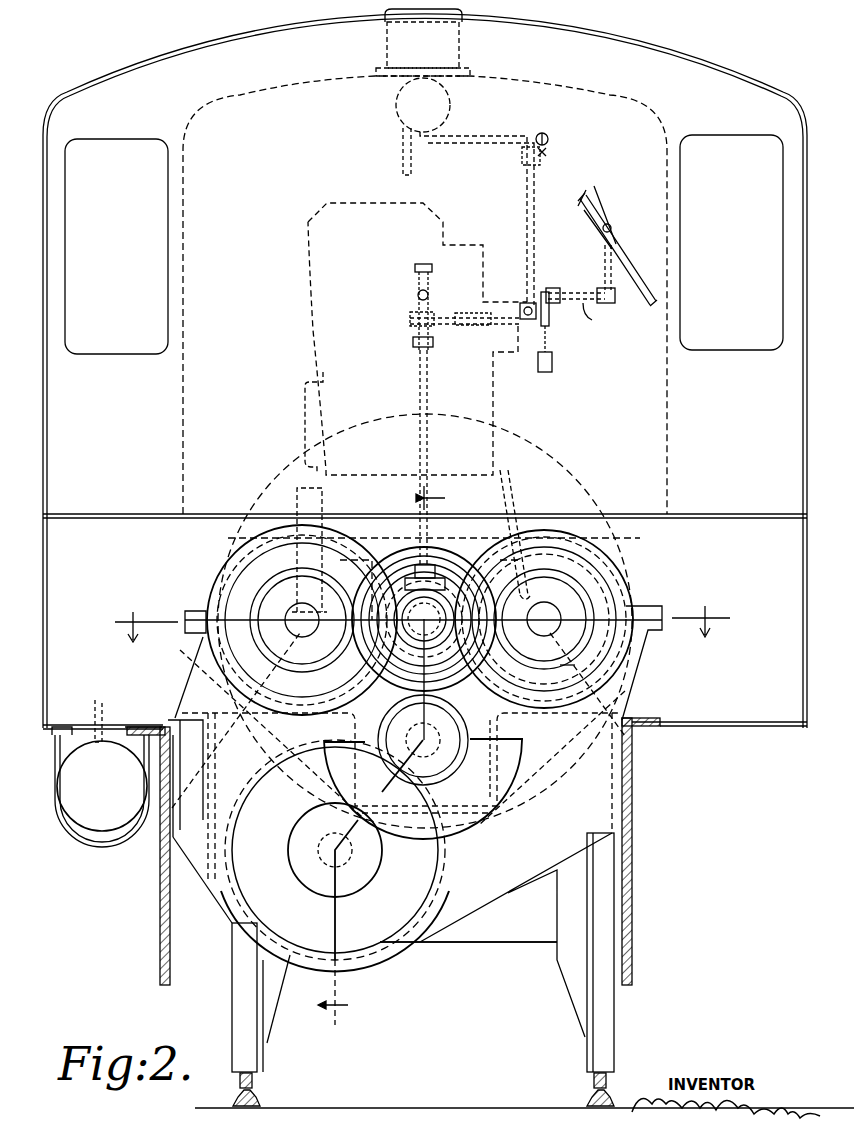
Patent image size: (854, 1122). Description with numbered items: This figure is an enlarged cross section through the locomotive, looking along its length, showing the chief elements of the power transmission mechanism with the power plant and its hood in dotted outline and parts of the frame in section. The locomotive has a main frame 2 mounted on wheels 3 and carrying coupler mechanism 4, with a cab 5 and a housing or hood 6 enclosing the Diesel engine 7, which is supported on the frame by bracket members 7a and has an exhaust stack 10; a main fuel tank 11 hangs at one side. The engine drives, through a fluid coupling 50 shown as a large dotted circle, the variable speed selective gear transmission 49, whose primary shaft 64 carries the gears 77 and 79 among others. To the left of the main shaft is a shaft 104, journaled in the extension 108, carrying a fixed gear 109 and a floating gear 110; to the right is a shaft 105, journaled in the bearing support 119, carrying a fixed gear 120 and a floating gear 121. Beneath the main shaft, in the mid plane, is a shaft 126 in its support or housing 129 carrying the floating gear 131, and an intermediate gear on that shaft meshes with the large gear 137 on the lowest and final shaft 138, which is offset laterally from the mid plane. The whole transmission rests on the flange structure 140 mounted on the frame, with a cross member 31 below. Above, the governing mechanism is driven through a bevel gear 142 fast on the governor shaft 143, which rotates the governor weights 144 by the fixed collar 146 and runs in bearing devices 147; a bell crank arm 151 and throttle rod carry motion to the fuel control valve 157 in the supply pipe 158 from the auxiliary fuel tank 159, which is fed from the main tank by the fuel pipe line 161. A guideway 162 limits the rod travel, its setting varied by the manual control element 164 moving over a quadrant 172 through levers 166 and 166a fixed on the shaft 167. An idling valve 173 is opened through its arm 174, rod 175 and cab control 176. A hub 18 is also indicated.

The main frame 2 is at (160, 926).
The wheels 3 is at (205, 1012).
The coupler mechanism 4 is at (422, 614).
The cab 5 is at (425, 371).
The housing or hood 6 is at (313, 82).
The engine 7 is at (316, 323).
The bracket members 7a is at (248, 736).
The exhaust outlet or stack 10 is at (462, 42).
The main fuel tank 11 is at (98, 835).
The hub 18 is at (466, 572).
The frame cross member 31 is at (508, 930).
The variable speed selective gear transmission 49 is at (598, 560).
The fluid coupling 50 is at (272, 487).
The primary shaft 64 is at (383, 592).
The gear 77 is at (390, 566).
The gear 79 is at (465, 545).
The shaft 104 is at (286, 613).
The shaft 105 is at (575, 603).
The extension 108 is at (218, 657).
The gear 109 is at (292, 574).
The gear 110 is at (262, 562).
The casing extension or bearing support 119 is at (636, 652).
The gear 120 is at (556, 565).
The gear 121 is at (598, 662).
The shaft 126 is at (438, 765).
The support or housing 129 is at (505, 795).
The floating gear 131 is at (548, 784).
The large gear 137 is at (440, 872).
The final shaft 138 is at (318, 860).
The flange structure 140 is at (178, 804).
The bevel gear 142 is at (406, 560).
The governor shaft 143 is at (430, 452).
The governor weights 144 is at (417, 295).
The fixed collar 146 is at (423, 263).
The bearing devices 147 is at (433, 344).
The bell crank arm 151 is at (552, 346).
The fuel control valve 157 is at (525, 302).
The supply pipe 158 is at (526, 208).
The auxiliary fuel tank 159 is at (450, 103).
The fuel pipe line 161 is at (401, 170).
The guideway 162 is at (448, 312).
The manual control element 164 is at (636, 280).
The lever 166 is at (603, 256).
The lever 166a is at (546, 290).
The shaft 167 is at (603, 317).
The quadrant 172 is at (600, 214).
The idling valve 173 is at (521, 156).
The arm 174 is at (547, 152).
The rod 175 is at (544, 130).
The cab control 176 is at (548, 137).